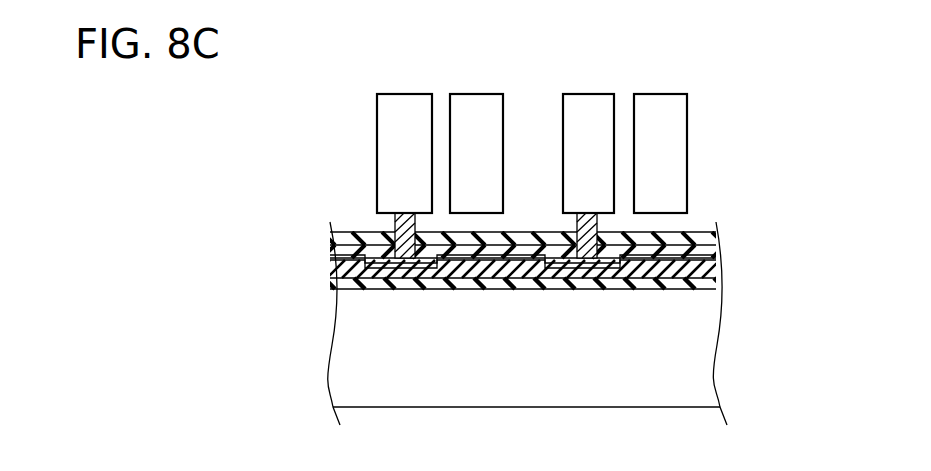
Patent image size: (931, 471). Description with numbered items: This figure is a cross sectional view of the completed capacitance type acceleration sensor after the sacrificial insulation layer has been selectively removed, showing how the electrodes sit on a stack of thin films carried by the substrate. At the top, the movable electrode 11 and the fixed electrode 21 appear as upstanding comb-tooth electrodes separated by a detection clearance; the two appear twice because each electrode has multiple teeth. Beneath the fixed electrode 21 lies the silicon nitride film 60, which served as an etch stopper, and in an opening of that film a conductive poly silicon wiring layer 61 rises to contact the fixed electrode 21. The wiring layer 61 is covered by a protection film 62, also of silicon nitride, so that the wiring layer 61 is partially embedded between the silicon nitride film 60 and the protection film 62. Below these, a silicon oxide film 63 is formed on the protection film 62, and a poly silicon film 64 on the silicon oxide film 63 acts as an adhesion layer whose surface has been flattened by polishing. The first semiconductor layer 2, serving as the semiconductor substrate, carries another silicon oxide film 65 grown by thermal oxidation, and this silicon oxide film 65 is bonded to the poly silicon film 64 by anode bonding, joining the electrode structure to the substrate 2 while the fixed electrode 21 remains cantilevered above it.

The first semiconductor layer 2 is at (700, 382).
The movable electrode 11 is at (481, 100).
The fixed electrode 21 is at (405, 100).
The silicon nitride film 60 is at (697, 232).
The wiring layer 61 is at (395, 225).
The protection film 62 is at (707, 250).
The silicon oxide film 63 is at (332, 259).
The poly silicon film 64 is at (707, 270).
The silicon oxide film 65 is at (332, 285).